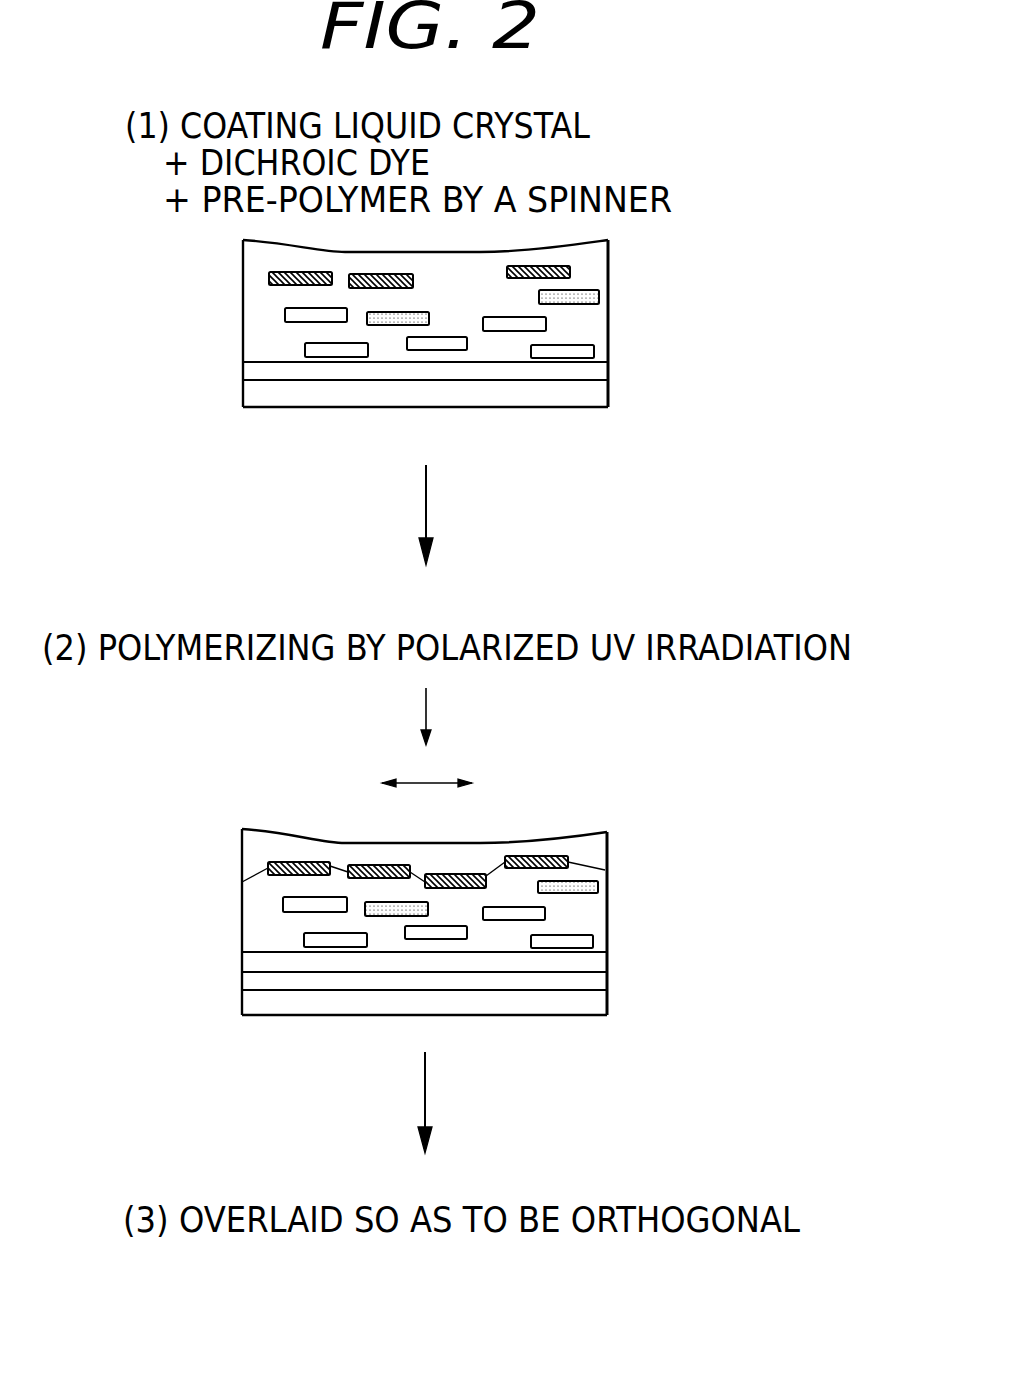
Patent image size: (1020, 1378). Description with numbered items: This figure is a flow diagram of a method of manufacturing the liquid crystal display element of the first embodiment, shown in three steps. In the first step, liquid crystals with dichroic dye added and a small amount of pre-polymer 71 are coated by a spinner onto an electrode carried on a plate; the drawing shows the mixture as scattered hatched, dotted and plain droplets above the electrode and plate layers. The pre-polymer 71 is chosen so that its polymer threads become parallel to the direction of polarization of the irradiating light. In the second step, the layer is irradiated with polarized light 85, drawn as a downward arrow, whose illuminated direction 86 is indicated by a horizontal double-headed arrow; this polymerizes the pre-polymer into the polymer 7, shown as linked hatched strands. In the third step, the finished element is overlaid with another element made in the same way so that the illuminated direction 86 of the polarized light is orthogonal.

The pre-polymer 71 is at (570, 267).
The polymer 7 is at (568, 856).
The polarized light 85 is at (426, 722).
The illuminated direction 86 is at (436, 780).